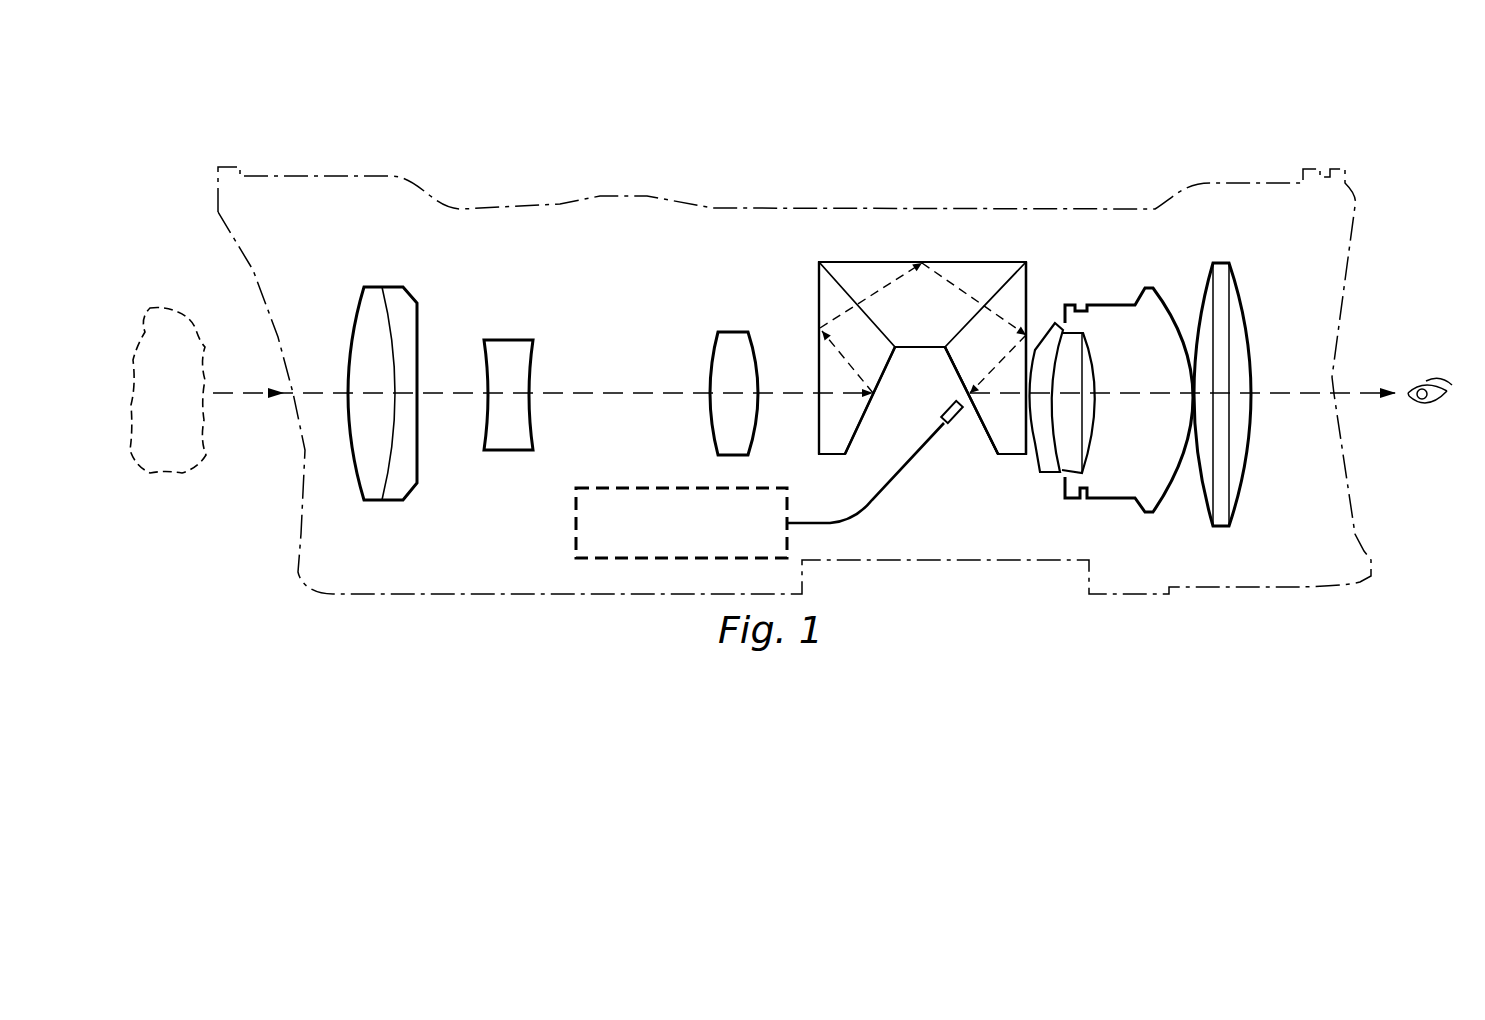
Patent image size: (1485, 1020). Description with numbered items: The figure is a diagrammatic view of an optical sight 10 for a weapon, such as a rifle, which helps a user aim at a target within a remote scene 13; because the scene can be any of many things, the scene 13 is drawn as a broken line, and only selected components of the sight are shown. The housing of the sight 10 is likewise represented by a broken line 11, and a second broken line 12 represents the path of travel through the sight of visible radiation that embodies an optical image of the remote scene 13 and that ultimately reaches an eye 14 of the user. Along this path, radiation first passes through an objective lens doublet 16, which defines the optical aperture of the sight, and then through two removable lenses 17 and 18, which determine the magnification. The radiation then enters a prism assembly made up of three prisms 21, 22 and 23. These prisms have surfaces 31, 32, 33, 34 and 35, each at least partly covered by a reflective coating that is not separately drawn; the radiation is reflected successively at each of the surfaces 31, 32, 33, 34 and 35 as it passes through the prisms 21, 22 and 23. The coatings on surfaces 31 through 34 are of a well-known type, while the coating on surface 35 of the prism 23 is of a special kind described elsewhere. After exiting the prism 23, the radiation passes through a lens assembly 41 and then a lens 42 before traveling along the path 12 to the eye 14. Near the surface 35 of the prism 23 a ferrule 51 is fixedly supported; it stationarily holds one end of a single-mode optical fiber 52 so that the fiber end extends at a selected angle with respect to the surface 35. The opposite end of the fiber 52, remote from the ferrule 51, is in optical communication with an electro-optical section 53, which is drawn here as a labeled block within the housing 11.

The optical sight 10 is at (858, 148).
The housing 11 is at (627, 192).
The path of travel 12 is at (632, 393).
The remote scene 13 is at (150, 477).
The eye 14 is at (1436, 405).
The objective lens doublet 16 is at (388, 287).
The removable lens 17 is at (508, 340).
The removable lens 18 is at (735, 332).
The prism 21 is at (817, 440).
The prism 22 is at (870, 262).
The prism 23 is at (1008, 458).
The surface 31 is at (865, 432).
The surface 32 is at (816, 295).
The surface 33 is at (1025, 258).
The surface 34 is at (1030, 292).
The surface 35 is at (988, 442).
The lens assembly 41 is at (1100, 500).
The lens 42 is at (1223, 263).
The ferrule 51 is at (948, 402).
The single-mode optical fiber 52 is at (890, 483).
The electro-optical section 53 is at (575, 532).